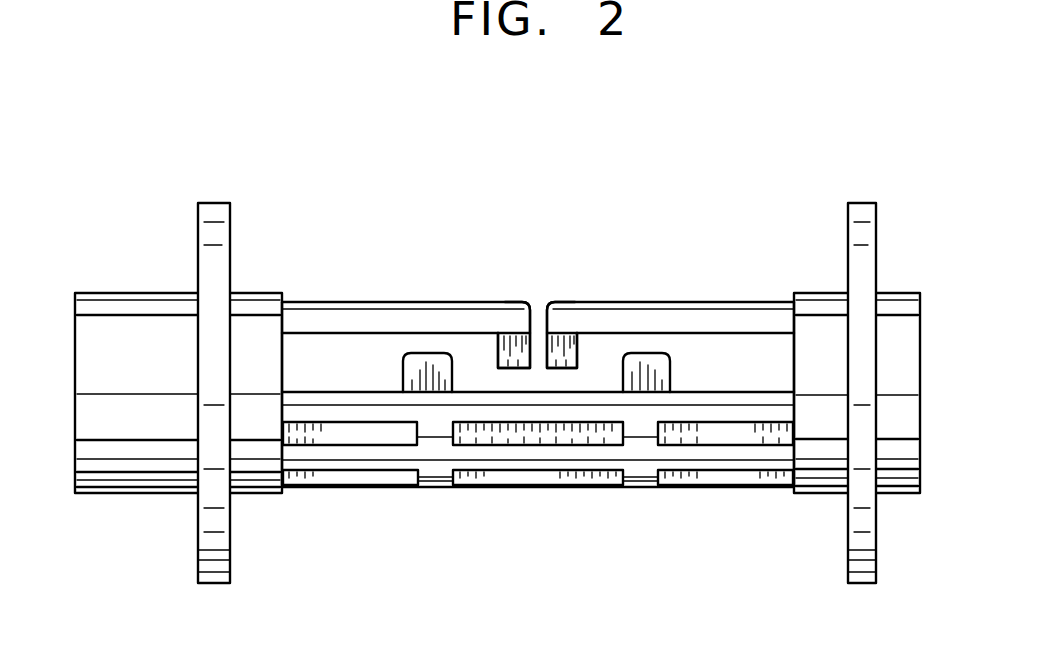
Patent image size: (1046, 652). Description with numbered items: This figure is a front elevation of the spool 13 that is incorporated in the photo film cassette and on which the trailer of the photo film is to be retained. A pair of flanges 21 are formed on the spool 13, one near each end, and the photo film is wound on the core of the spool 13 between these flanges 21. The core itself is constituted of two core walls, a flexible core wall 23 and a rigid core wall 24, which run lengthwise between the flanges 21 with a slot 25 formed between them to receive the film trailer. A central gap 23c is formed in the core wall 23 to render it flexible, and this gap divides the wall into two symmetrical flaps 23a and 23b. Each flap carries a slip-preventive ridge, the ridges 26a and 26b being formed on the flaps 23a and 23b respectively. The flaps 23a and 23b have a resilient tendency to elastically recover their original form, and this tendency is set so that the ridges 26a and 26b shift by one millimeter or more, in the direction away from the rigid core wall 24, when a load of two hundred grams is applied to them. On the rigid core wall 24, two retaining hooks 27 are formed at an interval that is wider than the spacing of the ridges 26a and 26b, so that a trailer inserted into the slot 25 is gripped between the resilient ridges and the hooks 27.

The spool 13 is at (573, 173).
The flanges 21 is at (213, 207).
The core wall 23 is at (335, 308).
The flap 23a is at (505, 305).
The flap 23b is at (558, 308).
The central gap 23c is at (537, 308).
The rigid core wall 24 is at (388, 453).
The slot 25 is at (523, 392).
The slip-preventive ridge 26a is at (500, 347).
The slip-preventive ridge 26b is at (573, 352).
The retaining hooks 27 is at (407, 368).